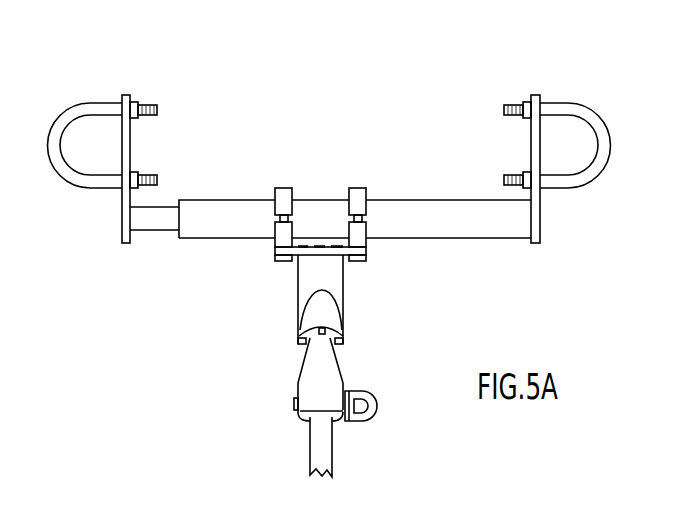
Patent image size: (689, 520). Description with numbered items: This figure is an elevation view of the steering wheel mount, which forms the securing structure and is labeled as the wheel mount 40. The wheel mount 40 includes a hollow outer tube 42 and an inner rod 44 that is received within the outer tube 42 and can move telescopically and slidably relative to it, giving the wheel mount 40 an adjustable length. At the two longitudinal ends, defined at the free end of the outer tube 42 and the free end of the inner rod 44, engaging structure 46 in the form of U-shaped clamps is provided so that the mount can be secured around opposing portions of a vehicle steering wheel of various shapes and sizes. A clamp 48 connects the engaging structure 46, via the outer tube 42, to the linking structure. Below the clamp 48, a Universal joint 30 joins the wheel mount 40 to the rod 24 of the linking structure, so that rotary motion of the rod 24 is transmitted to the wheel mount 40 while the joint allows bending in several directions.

The wheel mount 40 is at (406, 86).
The outer tube 42 is at (216, 199).
The inner rod 44 is at (154, 231).
The engaging structure 46 is at (56, 120).
The clamp 48 is at (363, 258).
The Universal joint 30 is at (316, 373).
The rod 24 is at (322, 458).